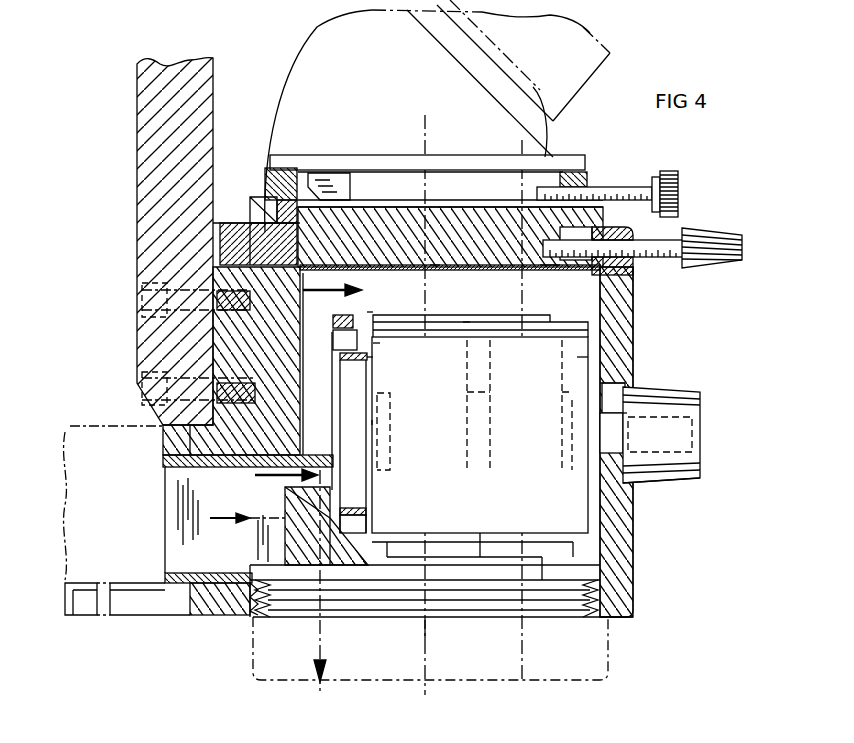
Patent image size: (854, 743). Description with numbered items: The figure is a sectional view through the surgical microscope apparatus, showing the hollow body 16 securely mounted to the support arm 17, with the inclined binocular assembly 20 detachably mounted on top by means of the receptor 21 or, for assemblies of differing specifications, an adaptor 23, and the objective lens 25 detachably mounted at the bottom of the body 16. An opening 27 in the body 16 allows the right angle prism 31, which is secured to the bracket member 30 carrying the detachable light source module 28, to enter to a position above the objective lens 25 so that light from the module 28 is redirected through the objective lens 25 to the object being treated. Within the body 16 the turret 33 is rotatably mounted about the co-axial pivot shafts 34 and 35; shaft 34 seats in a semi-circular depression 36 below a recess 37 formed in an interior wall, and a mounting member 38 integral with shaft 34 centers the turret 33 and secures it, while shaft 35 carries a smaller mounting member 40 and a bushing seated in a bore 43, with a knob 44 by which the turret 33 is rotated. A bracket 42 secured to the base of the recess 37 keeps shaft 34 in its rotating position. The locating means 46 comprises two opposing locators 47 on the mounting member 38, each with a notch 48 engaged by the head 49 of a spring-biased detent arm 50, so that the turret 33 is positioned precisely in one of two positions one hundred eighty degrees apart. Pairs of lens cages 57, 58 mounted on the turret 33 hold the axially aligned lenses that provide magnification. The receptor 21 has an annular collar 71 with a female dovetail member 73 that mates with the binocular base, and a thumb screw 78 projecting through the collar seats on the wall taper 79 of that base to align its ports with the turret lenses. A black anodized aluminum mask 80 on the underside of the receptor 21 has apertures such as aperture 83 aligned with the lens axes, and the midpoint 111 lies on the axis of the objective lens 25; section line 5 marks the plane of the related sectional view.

The section line 5- 5 is at (293, 483).
The hollow body 16 is at (165, 446).
The support arm 17 is at (137, 167).
The binocular assembly 20 is at (280, 60).
The receptor 21 is at (231, 220).
The adaptor 23 is at (257, 195).
The objective lens 25 is at (612, 642).
The opening 27 is at (370, 490).
The light source module 28 is at (85, 430).
The bracket member 30 is at (145, 618).
The right angle prism 31 is at (248, 617).
The turret 33 is at (577, 357).
The pivot shaft 34 is at (310, 423).
The pivot shaft 35 is at (618, 432).
The semi-circular depression 36 is at (327, 432).
The recess 37 is at (310, 373).
The mounting member 38 is at (355, 495).
The mounting member 40 is at (595, 390).
The bracket 42 is at (335, 400).
The bore 43 is at (627, 413).
The knob 44 is at (683, 480).
The locating means 46 is at (373, 310).
The locator 47 is at (367, 357).
The notch 48 is at (373, 343).
The head 49 is at (333, 333).
The detent arm 50 is at (333, 313).
The lens cage 57 is at (598, 332).
The lens cage 58 is at (463, 322).
The annular collar 71 is at (640, 238).
The female dovetail member 73 is at (327, 245).
The thumb screw 78 is at (722, 272).
The wall taper 79 is at (560, 213).
The aluminum mask 80 is at (436, 260).
The aperture 83 is at (545, 268).
The midpoint 111 is at (428, 620).